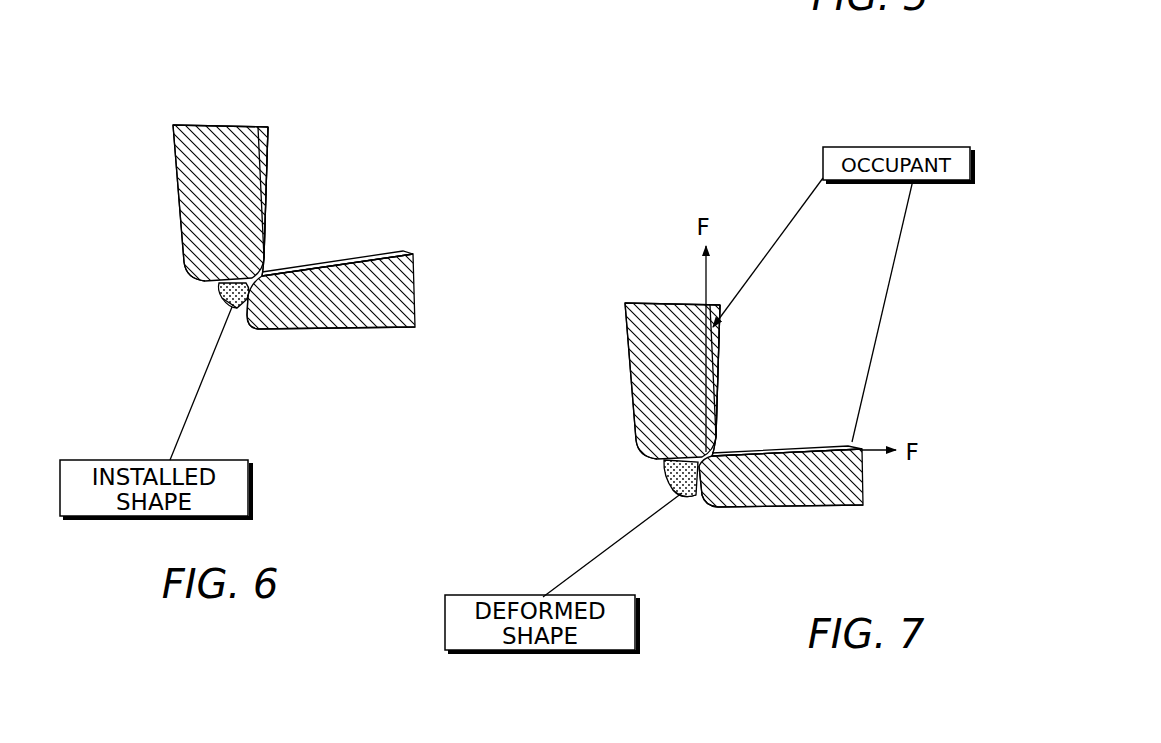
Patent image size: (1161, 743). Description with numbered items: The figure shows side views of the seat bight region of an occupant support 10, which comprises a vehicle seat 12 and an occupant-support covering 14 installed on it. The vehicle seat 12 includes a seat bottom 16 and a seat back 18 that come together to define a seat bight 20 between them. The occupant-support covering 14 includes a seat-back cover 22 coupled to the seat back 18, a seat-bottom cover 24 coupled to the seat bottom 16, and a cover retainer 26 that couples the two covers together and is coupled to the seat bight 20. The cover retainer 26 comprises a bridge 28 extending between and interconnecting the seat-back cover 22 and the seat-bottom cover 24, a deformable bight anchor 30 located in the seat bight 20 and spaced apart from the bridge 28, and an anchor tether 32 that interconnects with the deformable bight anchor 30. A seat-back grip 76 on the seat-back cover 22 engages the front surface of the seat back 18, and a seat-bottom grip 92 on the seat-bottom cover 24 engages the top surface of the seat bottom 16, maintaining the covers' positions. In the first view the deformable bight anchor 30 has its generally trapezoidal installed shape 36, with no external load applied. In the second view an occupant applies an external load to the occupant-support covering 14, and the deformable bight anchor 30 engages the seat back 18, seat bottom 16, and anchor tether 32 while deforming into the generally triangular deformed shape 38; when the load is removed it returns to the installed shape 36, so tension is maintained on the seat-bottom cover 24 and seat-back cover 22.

In FIG. 6, the occupant support 10 is at (200, 78).
In FIG. 7, the occupant support 10 is at (630, 225).
In FIG. 6, the vehicle seat 12 is at (207, 395).
In FIG. 7, the vehicle seat 12 is at (630, 575).
In FIG. 6, the occupant-support covering 14 is at (363, 220).
In FIG. 7, the occupant-support covering 14 is at (842, 395).
In FIG. 6, the seat bottom 16 is at (293, 342).
In FIG. 7, the seat bottom 16 is at (718, 517).
In FIG. 6, the seat back 18 is at (178, 215).
In FIG. 7, the seat back 18 is at (628, 365).
In FIG. 6, the seat bight 20 is at (220, 291).
In FIG. 7, the seat bight 20 is at (652, 471).
In FIG. 6, the seat-back cover 22 is at (278, 153).
In FIG. 7, the seat-back cover 22 is at (712, 350).
In FIG. 6, the seat-bottom cover 24 is at (375, 250).
In FIG. 7, the seat-bottom cover 24 is at (788, 440).
In FIG. 6, the cover retainer 26 is at (282, 262).
In FIG. 7, the cover retainer 26 is at (730, 442).
In FIG. 6, the bridge 28 is at (262, 265).
In FIG. 7, the bridge 28 is at (720, 453).
In FIG. 6, the deformable bight anchor 30 is at (221, 305).
In FIG. 7, the deformable bight anchor 30 is at (666, 486).
In FIG. 6, the anchor tether 32 is at (300, 303).
In FIG. 7, the anchor tether 32 is at (730, 487).
In FIG. 6, the installed shape 36 is at (233, 308).
In FIG. 7, the deformed shape 38 is at (680, 494).
In FIG. 6, the seat-back grip 76 is at (260, 126).
In FIG. 7, the seat-back grip 76 is at (700, 303).
In FIG. 6, the seat-bottom grip 92 is at (403, 258).
In FIG. 7, the seat-bottom grip 92 is at (862, 458).